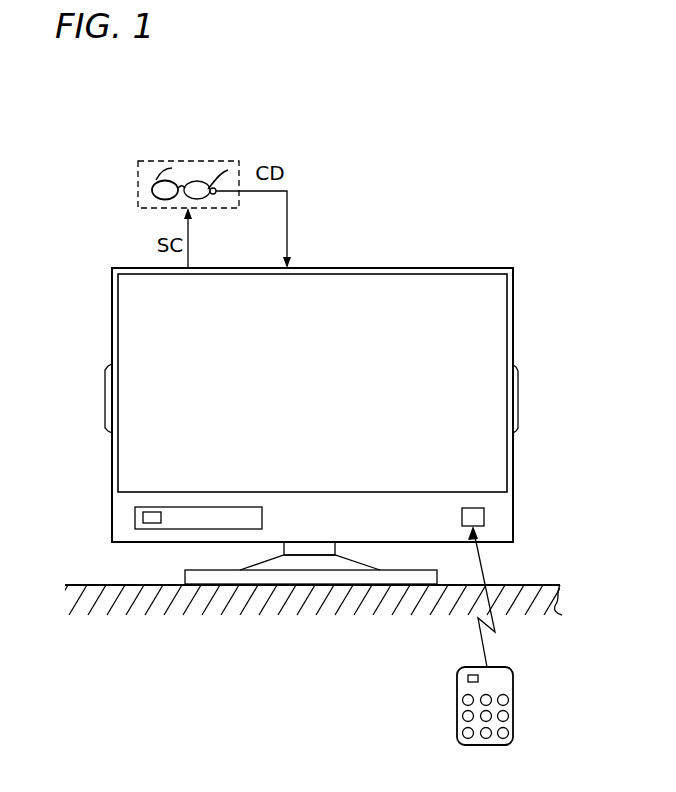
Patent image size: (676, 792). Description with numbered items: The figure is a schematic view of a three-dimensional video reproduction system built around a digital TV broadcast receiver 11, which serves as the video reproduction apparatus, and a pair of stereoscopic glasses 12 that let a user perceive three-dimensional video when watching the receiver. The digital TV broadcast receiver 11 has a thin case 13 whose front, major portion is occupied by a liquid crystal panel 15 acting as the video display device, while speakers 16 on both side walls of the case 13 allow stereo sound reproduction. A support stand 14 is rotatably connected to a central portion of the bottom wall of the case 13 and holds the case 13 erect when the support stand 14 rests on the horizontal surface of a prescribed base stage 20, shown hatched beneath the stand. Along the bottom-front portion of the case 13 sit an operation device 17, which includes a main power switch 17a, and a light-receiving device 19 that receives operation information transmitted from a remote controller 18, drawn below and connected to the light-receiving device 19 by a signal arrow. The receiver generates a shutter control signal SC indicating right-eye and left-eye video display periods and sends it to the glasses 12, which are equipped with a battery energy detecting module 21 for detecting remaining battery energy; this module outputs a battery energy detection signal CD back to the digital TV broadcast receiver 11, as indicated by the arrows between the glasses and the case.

The digital TV broadcast receiver 11 is at (490, 252).
The 3D glasses 12 is at (187, 158).
The case 13 is at (513, 313).
The support stand 14 is at (395, 570).
The liquid crystal panel 15 is at (395, 286).
The speakers 16 is at (105, 398).
The operation device 17 is at (262, 520).
The main power switch 17a is at (152, 523).
The remote controller 18 is at (513, 700).
The light-receiving device 19 is at (462, 522).
The base stage 20 is at (535, 585).
The battery energy detecting module 21 is at (215, 195).